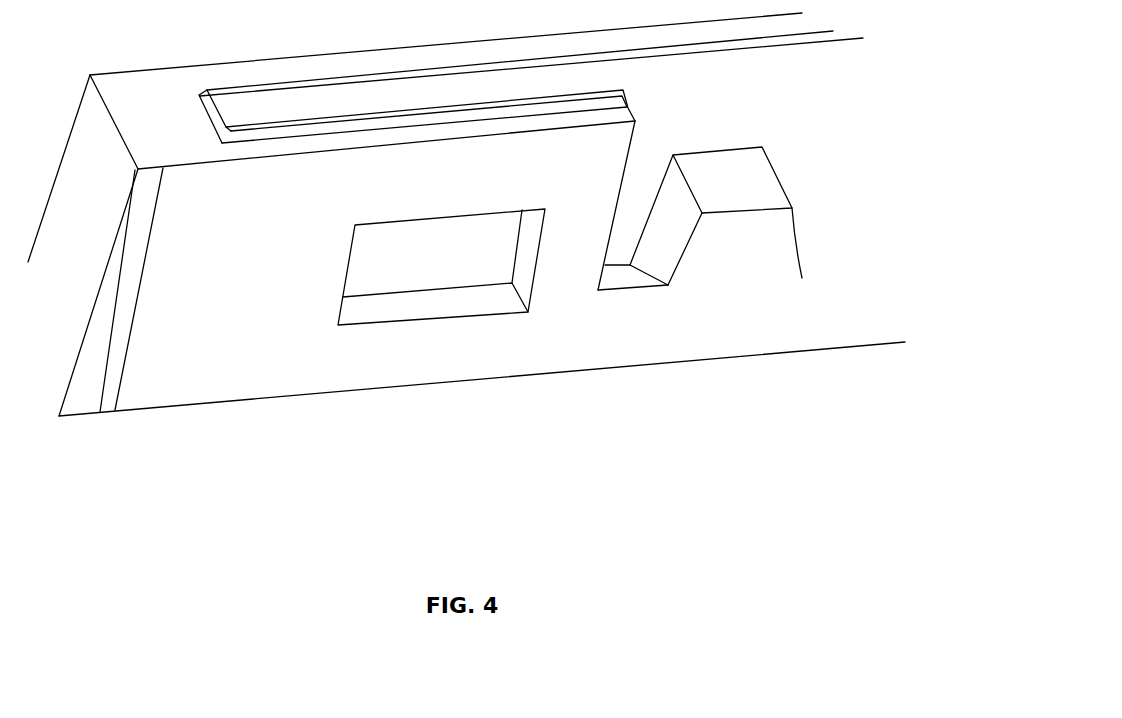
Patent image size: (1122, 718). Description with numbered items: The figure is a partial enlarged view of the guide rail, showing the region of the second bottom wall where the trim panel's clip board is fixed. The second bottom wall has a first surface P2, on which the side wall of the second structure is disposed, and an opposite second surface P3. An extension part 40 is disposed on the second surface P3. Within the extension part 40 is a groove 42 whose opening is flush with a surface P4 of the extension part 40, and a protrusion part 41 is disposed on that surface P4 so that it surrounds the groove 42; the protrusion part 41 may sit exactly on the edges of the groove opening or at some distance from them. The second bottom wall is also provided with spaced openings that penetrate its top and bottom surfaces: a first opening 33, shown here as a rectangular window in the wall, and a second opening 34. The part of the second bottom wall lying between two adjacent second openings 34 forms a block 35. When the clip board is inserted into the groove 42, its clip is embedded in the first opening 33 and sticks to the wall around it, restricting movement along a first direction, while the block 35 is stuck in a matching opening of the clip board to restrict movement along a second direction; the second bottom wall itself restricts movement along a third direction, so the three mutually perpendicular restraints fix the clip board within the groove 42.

The extension part 40 is at (153, 82).
The protrusion part 41 is at (205, 89).
The groove 42 is at (381, 92).
The first opening 33 is at (433, 272).
The second opening 34 is at (624, 252).
The block 35 is at (753, 247).
The first surface P2 is at (258, 314).
The second surface P3 is at (721, 136).
The surface of the extension part P4 is at (135, 108).